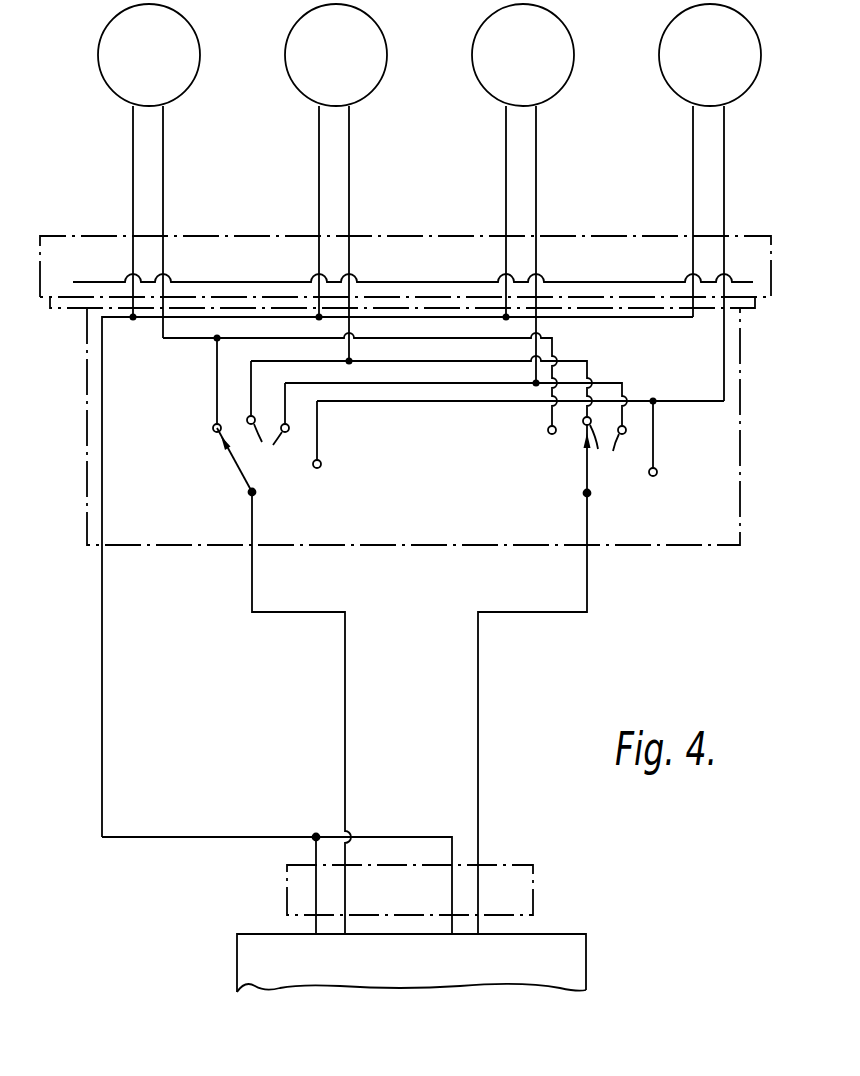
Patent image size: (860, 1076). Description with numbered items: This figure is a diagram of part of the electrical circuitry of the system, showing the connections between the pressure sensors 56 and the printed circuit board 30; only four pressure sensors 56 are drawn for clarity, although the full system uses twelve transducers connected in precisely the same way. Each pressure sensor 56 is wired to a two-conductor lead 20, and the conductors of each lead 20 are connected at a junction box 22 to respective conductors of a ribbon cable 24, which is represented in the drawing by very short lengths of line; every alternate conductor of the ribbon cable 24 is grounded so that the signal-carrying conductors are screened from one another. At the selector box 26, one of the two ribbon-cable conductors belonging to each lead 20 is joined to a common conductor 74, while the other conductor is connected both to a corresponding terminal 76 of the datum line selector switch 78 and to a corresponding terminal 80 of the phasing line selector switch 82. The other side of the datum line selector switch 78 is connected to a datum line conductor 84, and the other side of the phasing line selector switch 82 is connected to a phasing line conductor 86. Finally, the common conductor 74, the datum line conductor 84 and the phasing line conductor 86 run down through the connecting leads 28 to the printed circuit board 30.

The pressure sensor 56 is at (286, 57).
The lead 20 is at (138, 163).
The junction box 22 is at (765, 292).
The ribbon cable 24 is at (71, 296).
The selector box 26 is at (170, 388).
The terminal of datum line selector switch 76 is at (214, 431).
The datum line selector switch 78 is at (242, 472).
The terminal of phasing line selector switch 80 is at (549, 434).
The phasing line selector switch 82 is at (586, 470).
The datum line conductor 84 is at (345, 725).
The phasing line conductor 86 is at (478, 722).
The common conductor 74 is at (173, 838).
The connecting leads 28 is at (495, 876).
The printed circuit board 30 is at (550, 949).